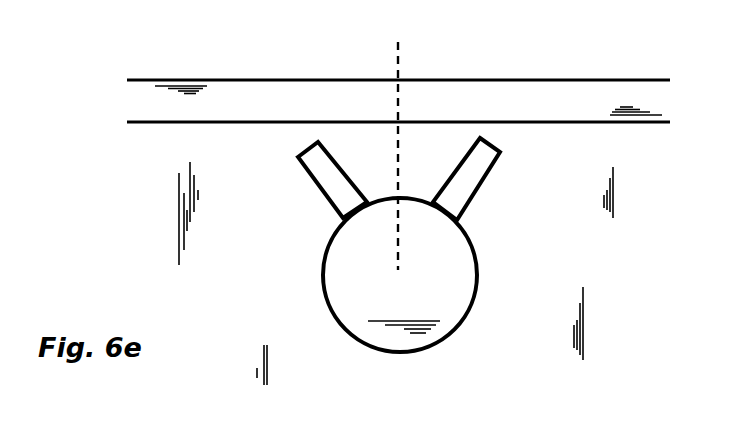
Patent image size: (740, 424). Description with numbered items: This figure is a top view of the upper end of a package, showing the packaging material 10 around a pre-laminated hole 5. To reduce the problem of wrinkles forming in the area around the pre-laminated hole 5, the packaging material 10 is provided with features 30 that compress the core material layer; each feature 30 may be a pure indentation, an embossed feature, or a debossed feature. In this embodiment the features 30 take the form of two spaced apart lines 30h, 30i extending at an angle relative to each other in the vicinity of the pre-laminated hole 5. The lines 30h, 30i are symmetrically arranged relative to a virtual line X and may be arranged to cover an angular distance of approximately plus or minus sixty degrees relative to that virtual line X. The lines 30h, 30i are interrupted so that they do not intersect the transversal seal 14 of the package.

The pre-laminated hole 5 is at (387, 337).
The packaging material 10 is at (298, 267).
The transversal seal 14 is at (348, 95).
The features 30 is at (387, 190).
The line 30h is at (318, 167).
The line 30i is at (455, 208).
The virtual line X is at (398, 80).